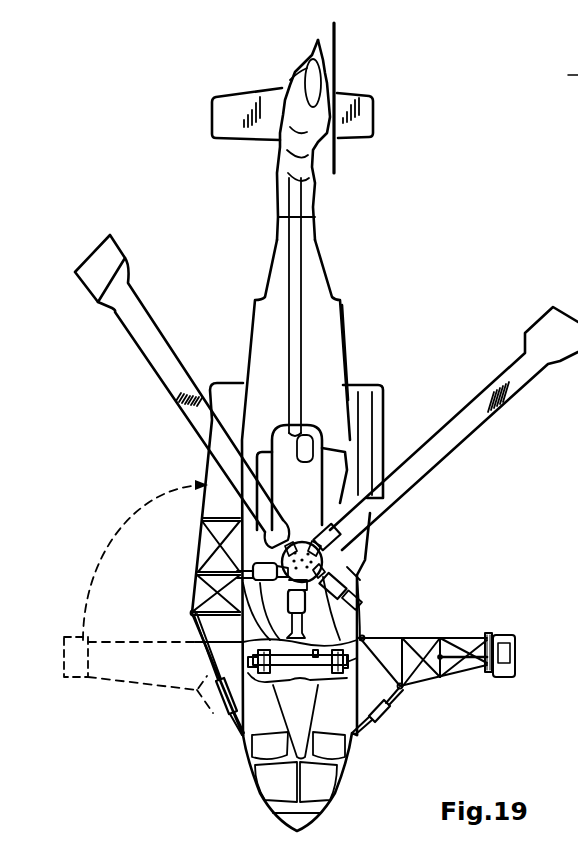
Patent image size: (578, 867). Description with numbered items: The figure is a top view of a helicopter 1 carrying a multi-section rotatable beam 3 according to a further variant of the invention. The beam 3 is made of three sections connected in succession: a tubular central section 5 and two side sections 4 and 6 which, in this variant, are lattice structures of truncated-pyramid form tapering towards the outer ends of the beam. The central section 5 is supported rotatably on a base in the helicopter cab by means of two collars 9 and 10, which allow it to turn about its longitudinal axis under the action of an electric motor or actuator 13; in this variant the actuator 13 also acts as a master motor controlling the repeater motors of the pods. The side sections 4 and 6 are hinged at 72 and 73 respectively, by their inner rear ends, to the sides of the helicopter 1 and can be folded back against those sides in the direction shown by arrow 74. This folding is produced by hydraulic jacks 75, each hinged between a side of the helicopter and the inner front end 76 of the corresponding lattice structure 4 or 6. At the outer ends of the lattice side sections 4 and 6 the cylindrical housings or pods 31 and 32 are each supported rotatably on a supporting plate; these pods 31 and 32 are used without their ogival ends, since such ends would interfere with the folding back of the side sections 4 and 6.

The helicopter 1 is at (340, 357).
The projecting beam 3 is at (414, 623).
The side section 4 is at (440, 648).
The central section 5 is at (296, 682).
The side section 6 is at (200, 558).
The collar 9 is at (355, 660).
The collar 10 is at (257, 674).
The electric motor (actuator) 13 is at (352, 577).
The cylindrical housing or pod 31 is at (518, 673).
The cylindrical housing or pod 32 is at (63, 667).
The hinge 72 is at (365, 632).
The hinge 73 is at (203, 650).
The arrow 74 is at (100, 557).
The hydraulic jack 75 is at (220, 714).
The inner front end 76 is at (193, 612).